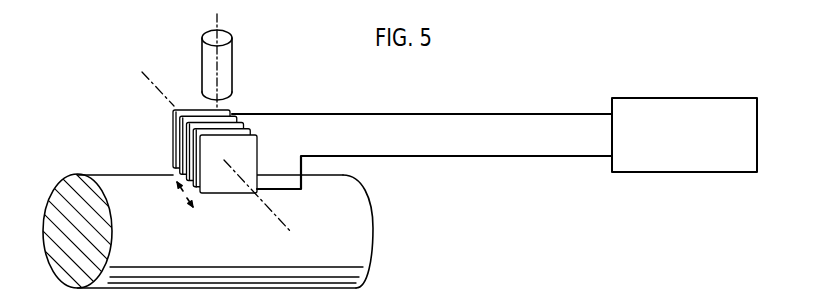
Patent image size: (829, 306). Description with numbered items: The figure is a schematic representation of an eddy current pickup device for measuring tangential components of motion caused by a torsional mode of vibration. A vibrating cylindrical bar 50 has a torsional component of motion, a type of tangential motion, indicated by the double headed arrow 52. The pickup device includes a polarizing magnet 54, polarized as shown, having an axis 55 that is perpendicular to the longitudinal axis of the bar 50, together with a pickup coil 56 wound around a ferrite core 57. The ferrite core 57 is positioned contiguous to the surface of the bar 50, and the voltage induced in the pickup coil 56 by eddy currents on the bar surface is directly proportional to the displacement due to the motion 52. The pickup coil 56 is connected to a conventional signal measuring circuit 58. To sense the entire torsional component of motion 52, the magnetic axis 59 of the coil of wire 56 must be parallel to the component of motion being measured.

The vibrating cylindrical bar 50 is at (357, 249).
The double headed arrow 52 is at (184, 193).
The polarizing magnet 54 is at (232, 45).
The axis of the magnet 55 is at (221, 24).
The pickup coil 56 is at (227, 121).
The ferrite core 57 is at (245, 148).
The signal measuring circuit 58 is at (730, 170).
The magnetic axis of the coil 59 is at (282, 220).